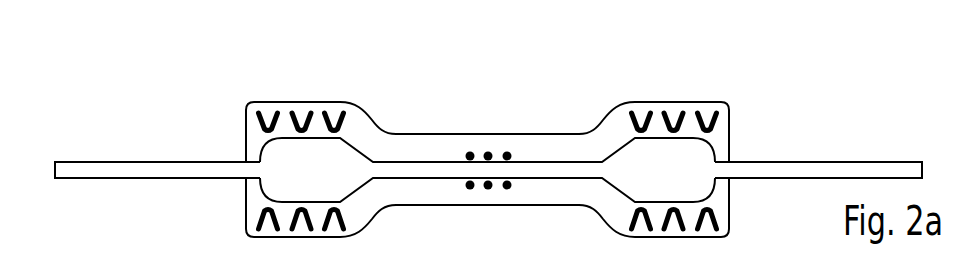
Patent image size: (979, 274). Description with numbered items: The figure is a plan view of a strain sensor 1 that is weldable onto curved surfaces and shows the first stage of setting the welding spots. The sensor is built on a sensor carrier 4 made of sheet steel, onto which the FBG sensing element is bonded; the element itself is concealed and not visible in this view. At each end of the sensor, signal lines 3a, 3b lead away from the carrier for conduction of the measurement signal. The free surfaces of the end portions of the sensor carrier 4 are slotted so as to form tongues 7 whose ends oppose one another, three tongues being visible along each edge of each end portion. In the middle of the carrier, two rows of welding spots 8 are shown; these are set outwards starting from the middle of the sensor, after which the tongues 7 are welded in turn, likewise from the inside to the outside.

The strain sensor 1 is at (439, 112).
The signal line 3a is at (115, 175).
The signal line 3b is at (802, 168).
The sensor carrier 4 is at (603, 142).
The tongues 7 is at (302, 112).
The welding spots 8 is at (488, 183).